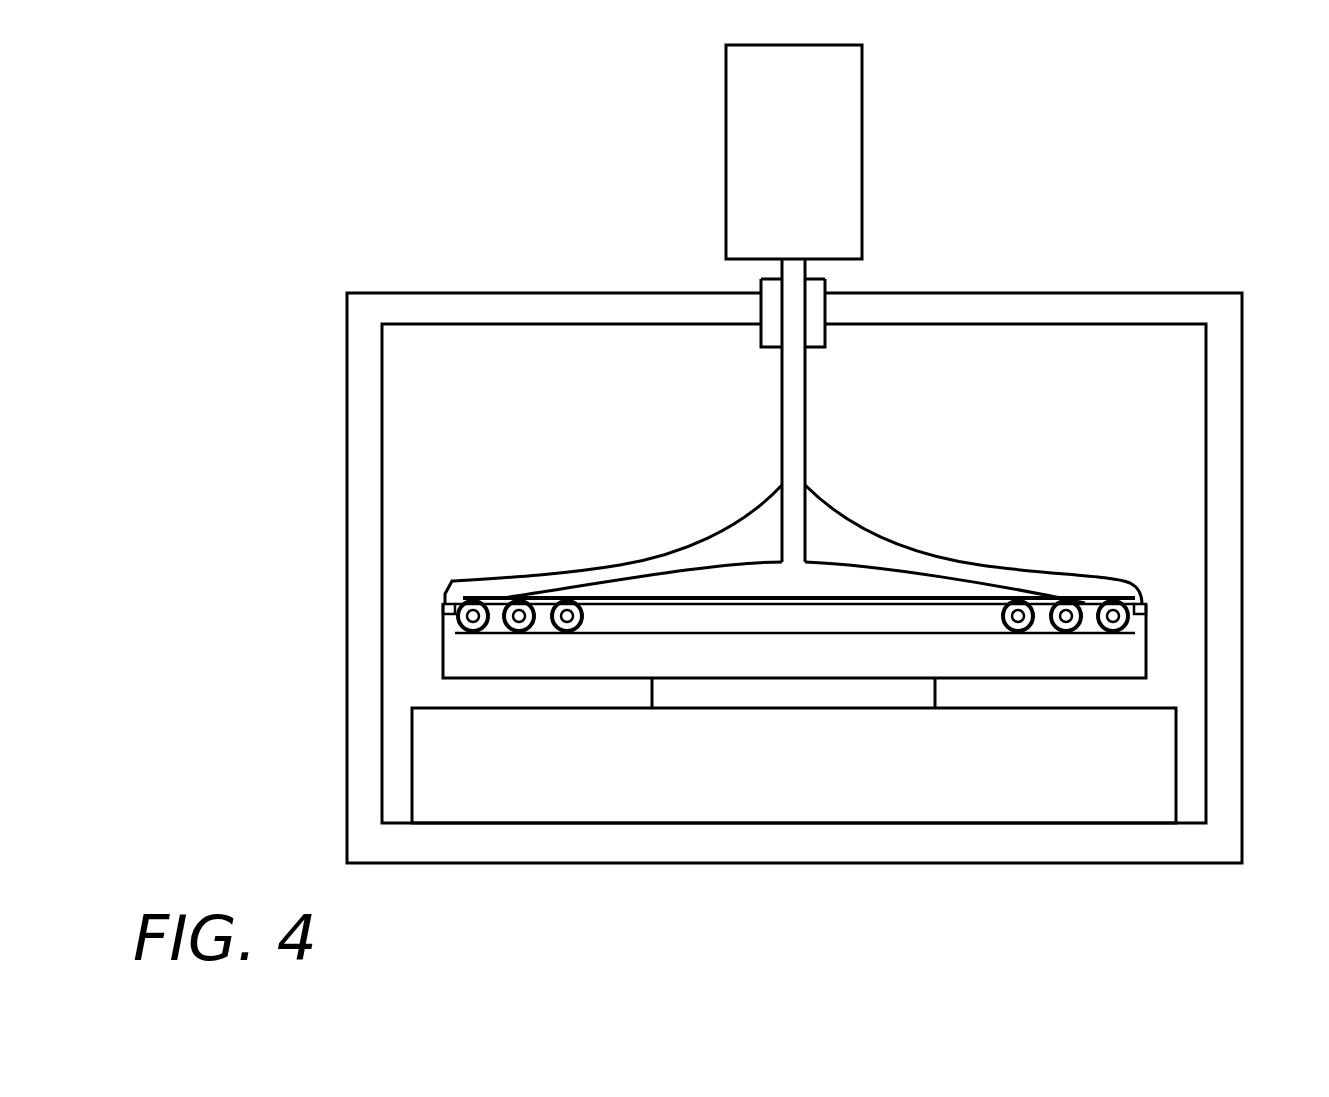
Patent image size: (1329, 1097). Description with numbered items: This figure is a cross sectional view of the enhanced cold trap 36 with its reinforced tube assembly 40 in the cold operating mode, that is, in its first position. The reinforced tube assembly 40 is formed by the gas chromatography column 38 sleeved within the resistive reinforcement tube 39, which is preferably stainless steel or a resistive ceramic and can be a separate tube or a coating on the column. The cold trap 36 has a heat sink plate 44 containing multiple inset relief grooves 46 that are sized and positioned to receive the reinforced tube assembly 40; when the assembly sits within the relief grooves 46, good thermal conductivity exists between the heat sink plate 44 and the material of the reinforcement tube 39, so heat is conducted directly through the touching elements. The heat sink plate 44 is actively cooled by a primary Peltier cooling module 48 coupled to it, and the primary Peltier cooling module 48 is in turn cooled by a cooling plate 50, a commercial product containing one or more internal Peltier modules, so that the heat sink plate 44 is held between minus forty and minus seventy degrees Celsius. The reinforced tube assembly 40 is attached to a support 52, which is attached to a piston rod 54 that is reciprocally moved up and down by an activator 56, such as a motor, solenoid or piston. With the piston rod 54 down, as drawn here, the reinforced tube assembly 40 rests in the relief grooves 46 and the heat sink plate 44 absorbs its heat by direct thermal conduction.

The enhanced cold trap 36 is at (1122, 186).
The activator 56 is at (726, 157).
The piston rod 54 is at (787, 456).
The support 52 is at (903, 543).
The inset relief grooves 46 is at (1125, 585).
The reinforced tube assembly 40 is at (568, 598).
The gas chromatography column 38 is at (1092, 605).
The resistive reinforcement tube 39 is at (1113, 616).
The heat sink plate 44 is at (468, 663).
The primary Peltier cooling module 48 is at (712, 693).
The cooling plate 50 is at (1158, 770).